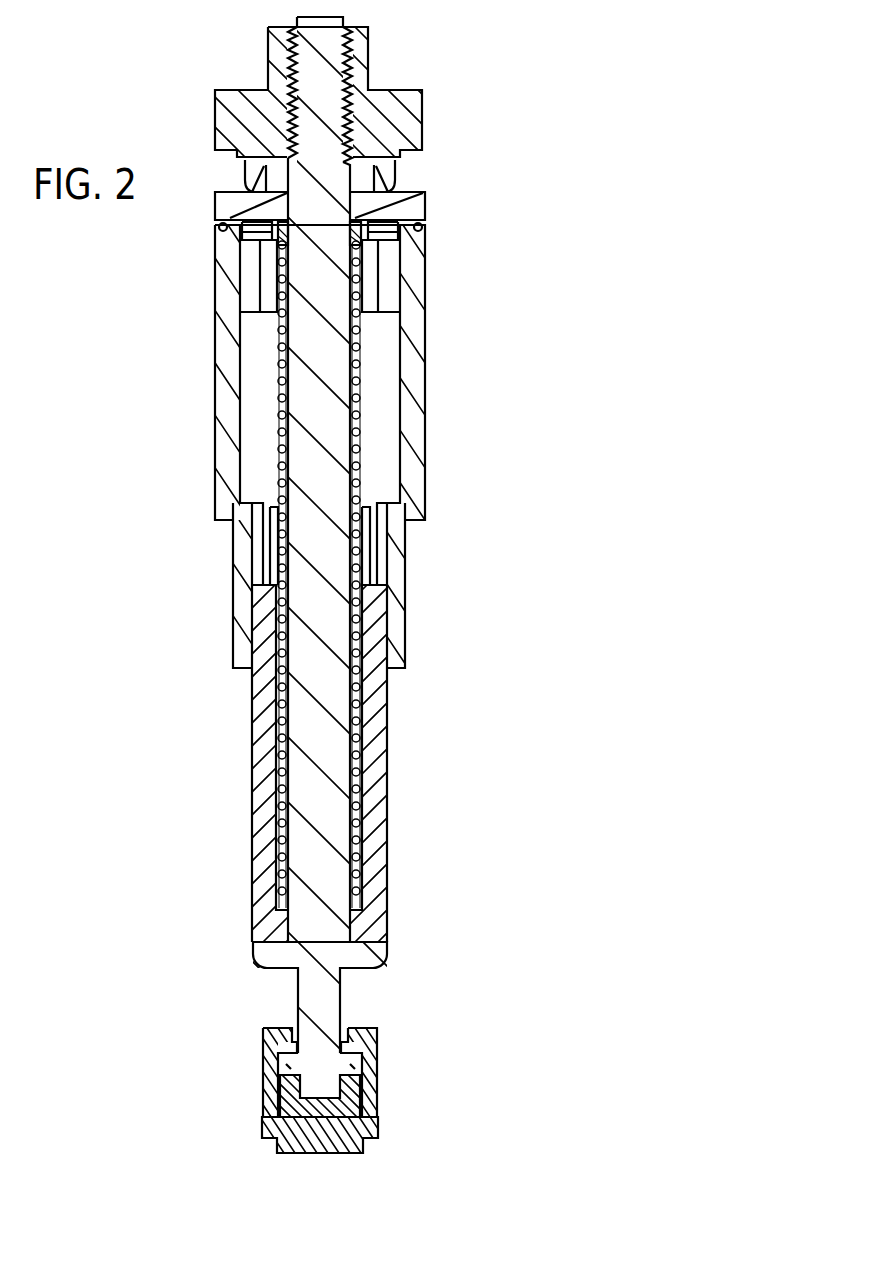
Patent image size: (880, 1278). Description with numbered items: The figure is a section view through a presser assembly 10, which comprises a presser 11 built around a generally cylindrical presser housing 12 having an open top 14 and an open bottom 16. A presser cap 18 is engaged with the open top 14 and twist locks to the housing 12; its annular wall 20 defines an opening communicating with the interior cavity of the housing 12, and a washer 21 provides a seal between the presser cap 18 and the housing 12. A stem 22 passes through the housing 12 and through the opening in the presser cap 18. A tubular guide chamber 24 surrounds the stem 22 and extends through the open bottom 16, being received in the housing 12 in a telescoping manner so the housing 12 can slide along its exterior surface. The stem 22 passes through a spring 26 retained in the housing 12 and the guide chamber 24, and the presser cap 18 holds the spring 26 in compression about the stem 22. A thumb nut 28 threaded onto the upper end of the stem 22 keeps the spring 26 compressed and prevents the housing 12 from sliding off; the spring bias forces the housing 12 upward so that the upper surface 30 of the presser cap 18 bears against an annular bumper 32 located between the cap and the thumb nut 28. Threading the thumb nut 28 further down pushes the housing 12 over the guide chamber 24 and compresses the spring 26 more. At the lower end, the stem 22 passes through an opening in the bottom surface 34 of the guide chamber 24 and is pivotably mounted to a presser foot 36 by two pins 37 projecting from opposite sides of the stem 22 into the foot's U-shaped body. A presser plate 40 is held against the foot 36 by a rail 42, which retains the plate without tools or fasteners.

The presser assembly 10 is at (503, 122).
The presser 11 is at (156, 478).
The presser housing 12 is at (410, 358).
The open top 14 is at (237, 237).
The open bottom 16 is at (245, 668).
The presser cap 18 is at (230, 203).
The annular wall 20 is at (348, 204).
The washer 21 is at (423, 225).
The stem 22 is at (315, 405).
The tubular guide chamber 24 is at (383, 722).
The spring 26 is at (363, 555).
The thumb nut 28 is at (227, 107).
The upper surface 30 is at (403, 190).
The annular bumper 32 is at (243, 180).
The bottom surface 34 is at (282, 970).
The presser foot 36 is at (350, 1097).
The pins 37 is at (353, 1066).
The presser plate 40 is at (323, 1135).
The rail 42 is at (368, 1062).